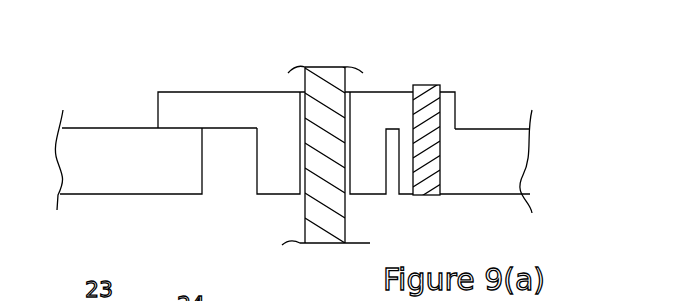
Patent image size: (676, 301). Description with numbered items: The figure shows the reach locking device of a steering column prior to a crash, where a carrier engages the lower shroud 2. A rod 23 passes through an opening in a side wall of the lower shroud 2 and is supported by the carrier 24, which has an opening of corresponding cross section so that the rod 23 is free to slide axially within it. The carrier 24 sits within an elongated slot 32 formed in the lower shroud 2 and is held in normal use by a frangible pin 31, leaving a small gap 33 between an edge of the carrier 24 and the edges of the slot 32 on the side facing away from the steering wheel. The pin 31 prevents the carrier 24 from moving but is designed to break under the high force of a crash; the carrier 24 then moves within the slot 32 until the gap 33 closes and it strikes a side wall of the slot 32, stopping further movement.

The lower shroud 2 is at (113, 197).
The rod 23 is at (185, 92).
The carrier 24 is at (333, 80).
The frangible pin 31 is at (433, 86).
The elongated slot 32 is at (200, 147).
The gap 33 is at (231, 167).